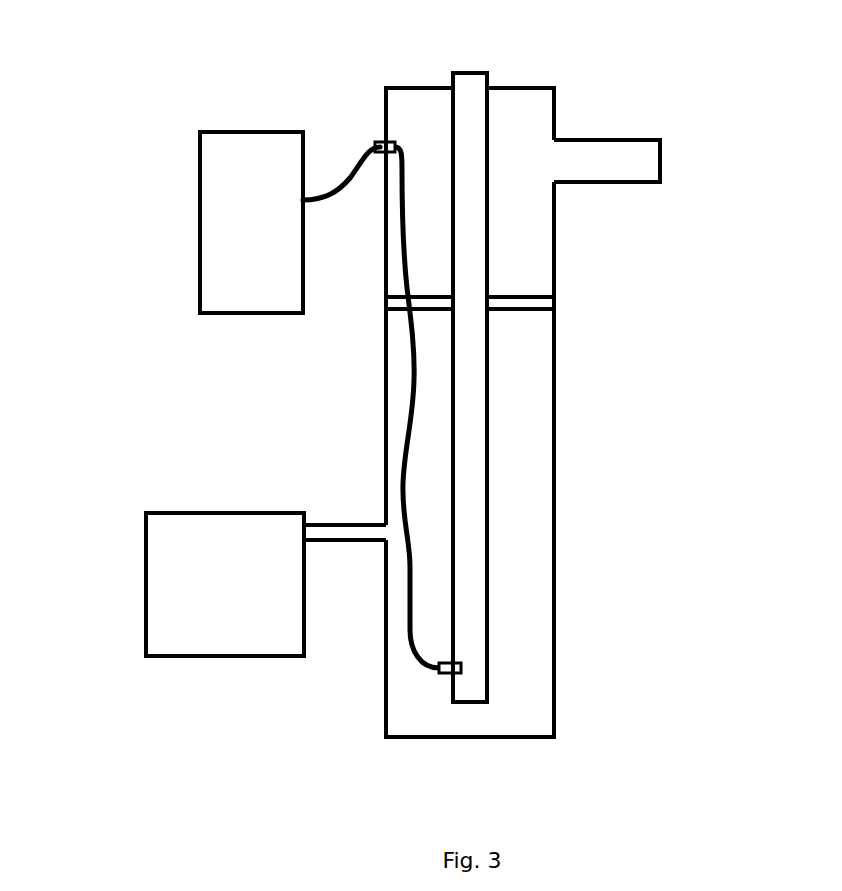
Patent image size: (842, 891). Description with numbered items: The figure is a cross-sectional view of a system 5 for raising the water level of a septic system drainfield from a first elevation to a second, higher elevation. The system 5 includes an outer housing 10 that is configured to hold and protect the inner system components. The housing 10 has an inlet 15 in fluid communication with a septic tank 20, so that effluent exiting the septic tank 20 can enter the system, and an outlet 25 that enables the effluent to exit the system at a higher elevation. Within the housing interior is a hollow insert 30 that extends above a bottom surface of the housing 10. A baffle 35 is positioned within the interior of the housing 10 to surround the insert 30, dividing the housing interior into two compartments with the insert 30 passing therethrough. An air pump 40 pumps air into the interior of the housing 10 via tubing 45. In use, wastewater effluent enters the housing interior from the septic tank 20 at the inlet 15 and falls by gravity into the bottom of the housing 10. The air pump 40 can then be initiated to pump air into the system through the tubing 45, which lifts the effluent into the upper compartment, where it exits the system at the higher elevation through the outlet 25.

The system 5 is at (103, 100).
The outer housing 10 is at (556, 505).
The inlet 15 is at (350, 532).
The septic tank 20 is at (242, 596).
The outlet 25 is at (663, 160).
The hollow insert 30 is at (470, 93).
The baffle 35 is at (527, 300).
The air pump 40 is at (262, 223).
The tubing 45 is at (413, 393).